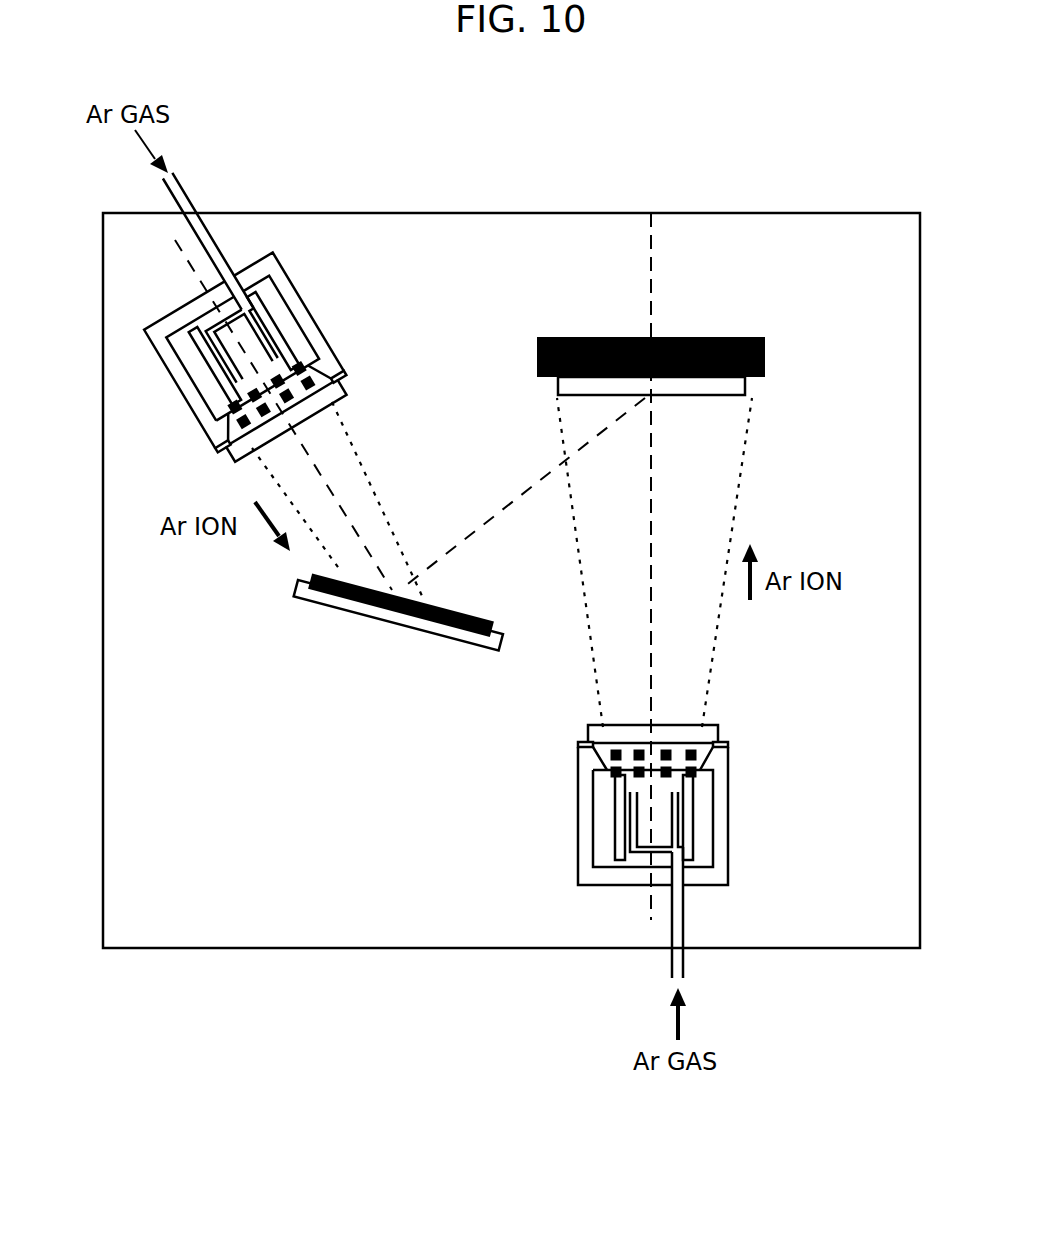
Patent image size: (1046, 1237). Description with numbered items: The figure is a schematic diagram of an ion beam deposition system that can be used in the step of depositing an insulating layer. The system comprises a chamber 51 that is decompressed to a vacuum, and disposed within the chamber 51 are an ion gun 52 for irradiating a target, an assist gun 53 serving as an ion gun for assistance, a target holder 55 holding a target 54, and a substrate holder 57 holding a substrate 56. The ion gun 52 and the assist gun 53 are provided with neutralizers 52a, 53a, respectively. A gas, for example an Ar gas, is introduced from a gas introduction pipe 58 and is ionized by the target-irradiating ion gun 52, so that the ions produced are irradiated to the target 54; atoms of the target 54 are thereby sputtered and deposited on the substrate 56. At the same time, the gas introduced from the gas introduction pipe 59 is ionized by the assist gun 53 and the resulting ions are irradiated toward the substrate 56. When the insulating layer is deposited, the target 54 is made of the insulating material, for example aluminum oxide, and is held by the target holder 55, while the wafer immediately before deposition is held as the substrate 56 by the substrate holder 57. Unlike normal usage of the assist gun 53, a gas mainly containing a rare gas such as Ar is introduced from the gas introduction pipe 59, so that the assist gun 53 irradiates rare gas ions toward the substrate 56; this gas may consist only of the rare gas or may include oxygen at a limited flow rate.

The chamber 51 is at (478, 213).
The ion gun 52 is at (300, 296).
The neutralizer 52a is at (332, 393).
The assist gun 53 is at (730, 822).
The neutralizer 53a is at (703, 725).
The target 54 is at (447, 605).
The target holder 55 is at (476, 645).
The substrate 56 is at (712, 395).
The substrate holder 57 is at (700, 337).
The gas introduction pipe 58 is at (188, 188).
The gas introduction pipe 59 is at (683, 960).